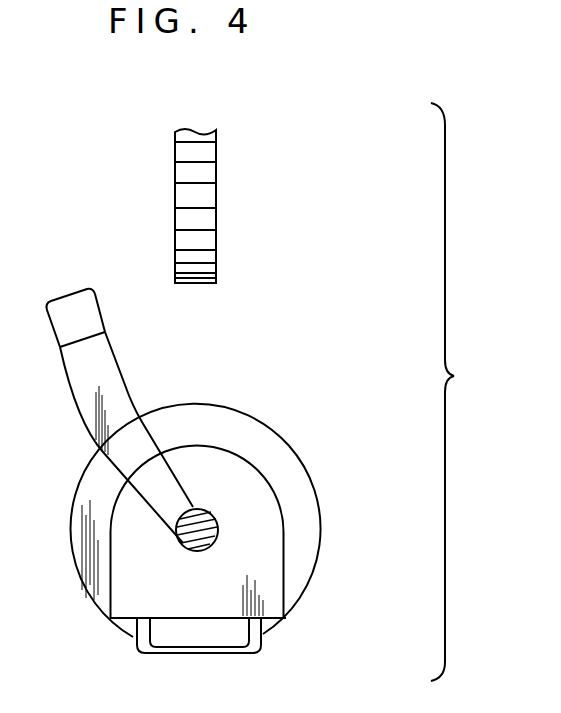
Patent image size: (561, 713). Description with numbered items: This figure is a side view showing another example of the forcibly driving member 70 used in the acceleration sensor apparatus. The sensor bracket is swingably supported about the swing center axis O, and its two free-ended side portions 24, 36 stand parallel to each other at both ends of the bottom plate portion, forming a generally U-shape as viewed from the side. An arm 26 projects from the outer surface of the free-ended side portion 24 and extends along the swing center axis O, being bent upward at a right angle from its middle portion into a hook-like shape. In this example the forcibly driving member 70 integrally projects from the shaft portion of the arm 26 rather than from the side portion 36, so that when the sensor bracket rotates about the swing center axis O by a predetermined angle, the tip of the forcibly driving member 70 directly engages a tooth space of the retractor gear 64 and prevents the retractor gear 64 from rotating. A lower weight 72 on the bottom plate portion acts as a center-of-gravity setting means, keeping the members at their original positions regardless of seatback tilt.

The free-ended side portion 24 is at (243, 475).
The arm 26 is at (218, 517).
The free-ended side portion 36 is at (302, 560).
The retractor gear 64 is at (210, 262).
The forcibly driving member 70 is at (98, 353).
The lower weight 72 is at (241, 636).
The swing center axis O is at (190, 546).